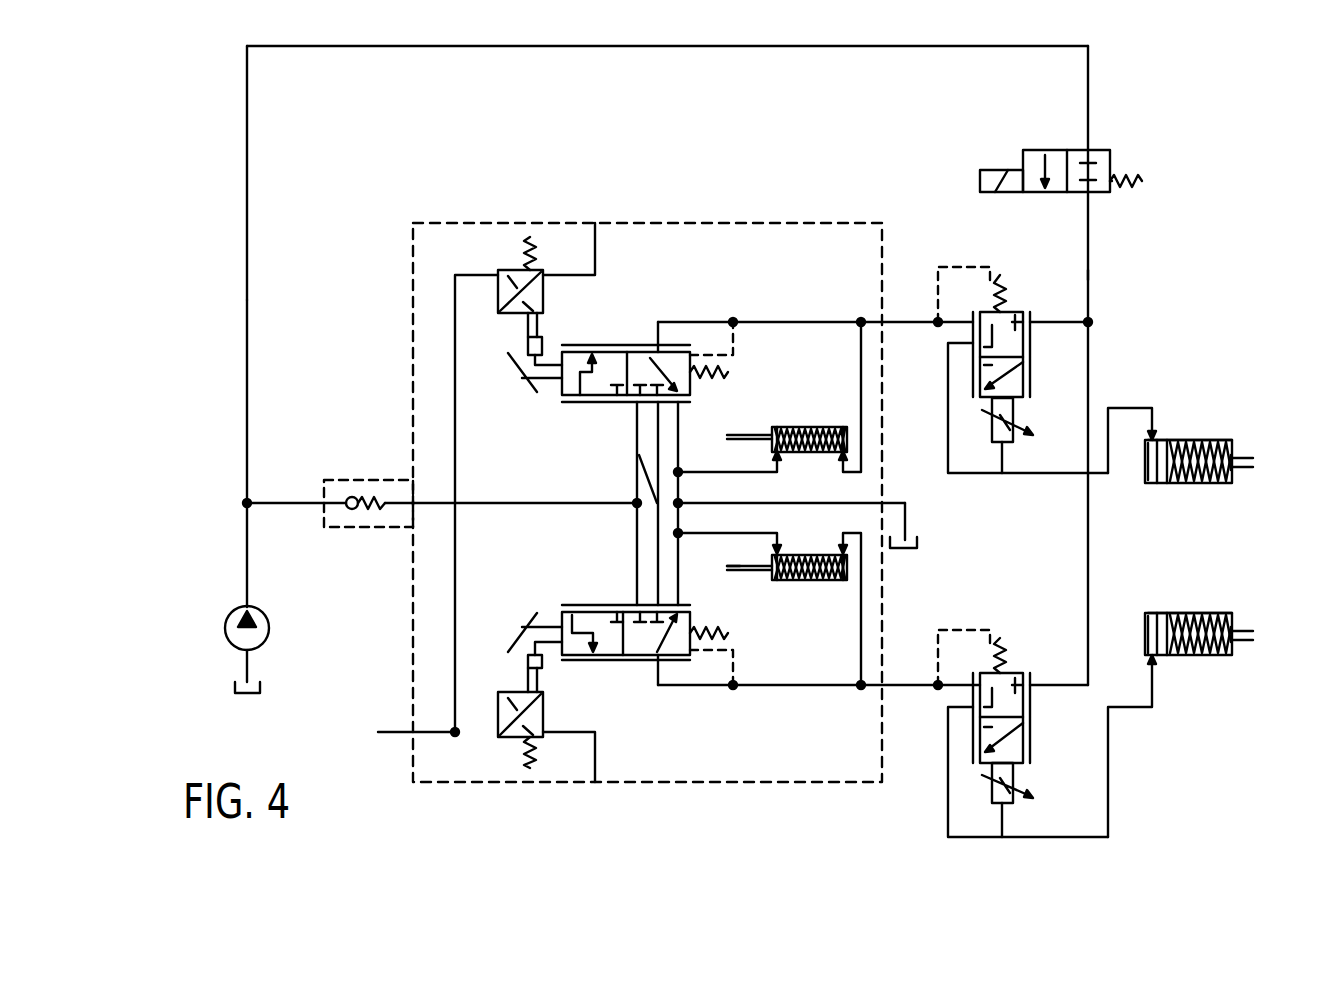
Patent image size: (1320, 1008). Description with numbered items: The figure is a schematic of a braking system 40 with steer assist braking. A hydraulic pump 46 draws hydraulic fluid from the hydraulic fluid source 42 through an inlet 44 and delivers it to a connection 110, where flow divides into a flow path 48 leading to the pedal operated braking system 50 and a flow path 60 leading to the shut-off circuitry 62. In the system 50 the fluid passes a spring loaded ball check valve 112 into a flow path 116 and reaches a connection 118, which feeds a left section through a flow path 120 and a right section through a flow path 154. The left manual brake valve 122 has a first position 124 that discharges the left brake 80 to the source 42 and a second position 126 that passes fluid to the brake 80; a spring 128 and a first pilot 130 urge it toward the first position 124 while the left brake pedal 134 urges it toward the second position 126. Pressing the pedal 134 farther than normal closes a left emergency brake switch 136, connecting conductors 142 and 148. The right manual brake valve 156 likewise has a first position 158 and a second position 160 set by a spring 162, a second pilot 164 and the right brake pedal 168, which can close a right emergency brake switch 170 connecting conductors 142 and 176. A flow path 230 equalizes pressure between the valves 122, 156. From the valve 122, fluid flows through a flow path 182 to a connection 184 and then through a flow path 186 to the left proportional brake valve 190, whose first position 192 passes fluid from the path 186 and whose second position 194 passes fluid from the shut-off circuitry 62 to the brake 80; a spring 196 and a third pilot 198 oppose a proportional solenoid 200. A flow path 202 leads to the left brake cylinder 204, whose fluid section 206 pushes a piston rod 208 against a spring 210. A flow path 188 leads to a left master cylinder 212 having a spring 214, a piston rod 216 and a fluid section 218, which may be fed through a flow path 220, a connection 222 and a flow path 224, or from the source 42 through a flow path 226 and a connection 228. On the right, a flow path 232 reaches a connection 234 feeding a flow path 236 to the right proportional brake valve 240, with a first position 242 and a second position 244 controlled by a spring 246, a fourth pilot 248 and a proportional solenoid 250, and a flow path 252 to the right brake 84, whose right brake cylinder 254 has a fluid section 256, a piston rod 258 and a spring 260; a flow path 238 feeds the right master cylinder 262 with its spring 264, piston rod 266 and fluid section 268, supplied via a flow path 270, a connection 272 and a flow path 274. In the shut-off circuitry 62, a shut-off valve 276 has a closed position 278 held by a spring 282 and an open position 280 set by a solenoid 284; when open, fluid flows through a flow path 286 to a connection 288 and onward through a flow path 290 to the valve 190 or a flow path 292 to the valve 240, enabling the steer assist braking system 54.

The braking system 40 is at (216, 77).
The hydraulic fluid source 42 is at (246, 699).
The suction line 44 is at (245, 672).
The hydraulic pump 46 is at (230, 618).
The flow path 48 is at (295, 506).
The pedal operated braking system 50 is at (648, 784).
The steer assist braking system 54 is at (1175, 293).
The flow path 60 is at (810, 48).
The shut-off circuitry 62 is at (1148, 139).
The left brake 80 is at (1175, 498).
The right brake 84 is at (1183, 611).
The connection 110 is at (243, 500).
The spring loaded ball check valve 112 is at (349, 497).
The flow path 116 is at (545, 506).
The connection 118 is at (632, 500).
The flow path 120 is at (634, 440).
The left manual brake valve 122 is at (625, 336).
The first position 124 is at (678, 355).
The second position 126 is at (606, 350).
The spring 128 is at (757, 362).
The first pilot 130 is at (747, 320).
The left brake pedal 134 is at (520, 375).
The left emergency brake switch 136 is at (486, 292).
The conductor 142 is at (437, 601).
The conductor 148 is at (598, 243).
The flow path 154 is at (637, 548).
The right manual brake valve 156 is at (642, 667).
The first position 158 is at (672, 666).
The second position 160 is at (586, 613).
The spring 162 is at (757, 640).
The second pilot 164 is at (735, 700).
The right brake pedal 168 is at (520, 630).
The right emergency brake switch 170 is at (500, 707).
The conductor 176 is at (598, 760).
The flow path 182 is at (824, 320).
The connection 184 is at (859, 319).
The flow path 186 is at (903, 326).
The flow path 188 is at (858, 375).
The left proportional brake valve 190 is at (1042, 384).
The first position 192 is at (1028, 345).
The second position 194 is at (975, 385).
The spring 196 is at (1003, 278).
The third pilot 198 is at (935, 290).
The proportional solenoid 200 is at (1008, 455).
The flow path 202 is at (1040, 478).
The left brake cylinder 204 is at (1200, 486).
The fluid section 206 is at (1148, 476).
The piston rod 208 is at (1160, 437).
The spring 210 is at (1195, 440).
The left master cylinder 212 is at (810, 426).
The spring 214 is at (835, 426).
The piston rod 216 is at (795, 460).
The fluid section 218 is at (772, 430).
The flow path 220 is at (683, 440).
The connection 222 is at (682, 470).
The flow path 224 is at (732, 474).
The flow path 226 is at (808, 507).
The connection 228 is at (684, 507).
The flow path 230 is at (645, 475).
The flow path 232 is at (740, 688).
The connection 234 is at (858, 690).
The flow path 236 is at (920, 692).
The flow path 238 is at (858, 660).
The right proportional brake valve 240 is at (1042, 734).
The first position 242 is at (1030, 700).
The second position 244 is at (978, 740).
The spring 246 is at (1003, 648).
The fourth pilot 248 is at (960, 628).
The proportional solenoid 250 is at (1005, 808).
The flow path 252 is at (945, 830).
The right brake cylinder 254 is at (1190, 660).
The fluid section 256 is at (1150, 632).
The piston rod 258 is at (1165, 660).
The spring 260 is at (1195, 615).
The right master cylinder 262 is at (812, 585).
The spring 264 is at (838, 584).
The piston rod 266 is at (781, 550).
The fluid section 268 is at (780, 584).
The flow path 270 is at (688, 590).
The connection 272 is at (688, 562).
The flow path 274 is at (700, 538).
The shut-off valve 276 is at (1108, 195).
The closed position 278 is at (1098, 148).
The open position 280 is at (1023, 150).
The spring 282 is at (1145, 183).
The solenoid 284 is at (978, 178).
The flow path 286 is at (1090, 262).
The connection 288 is at (1091, 324).
The flow path 290 is at (1058, 320).
The flow path 292 is at (1091, 395).